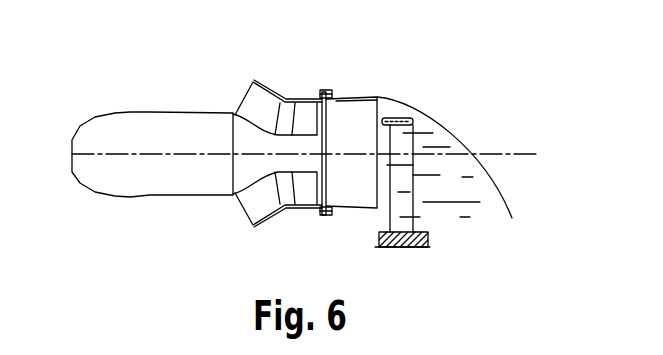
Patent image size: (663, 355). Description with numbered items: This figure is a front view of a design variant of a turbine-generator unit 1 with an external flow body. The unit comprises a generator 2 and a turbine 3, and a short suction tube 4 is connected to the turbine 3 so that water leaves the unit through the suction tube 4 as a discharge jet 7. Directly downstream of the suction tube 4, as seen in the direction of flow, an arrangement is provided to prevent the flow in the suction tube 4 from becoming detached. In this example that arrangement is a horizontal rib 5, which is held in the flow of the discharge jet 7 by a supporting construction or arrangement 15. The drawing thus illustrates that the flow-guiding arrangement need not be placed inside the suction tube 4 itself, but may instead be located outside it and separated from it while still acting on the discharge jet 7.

The turbine-generator unit 1 is at (200, 210).
The generator 2 is at (183, 137).
The turbine 3 is at (308, 125).
The suction tube 4 is at (363, 97).
The horizontal rib 5 is at (412, 118).
The discharge jet 7 is at (402, 110).
The supporting construction or arrangement 15 is at (402, 178).